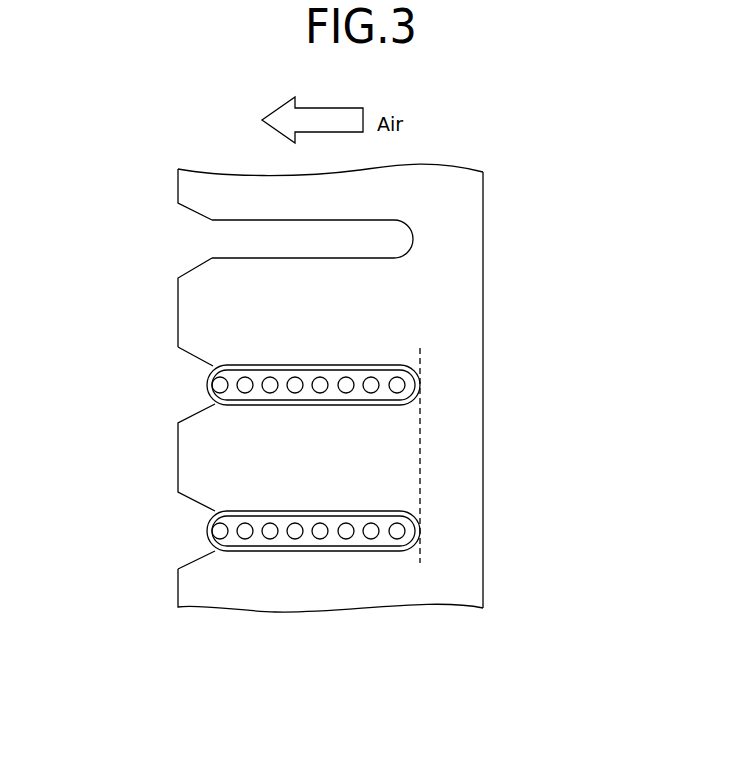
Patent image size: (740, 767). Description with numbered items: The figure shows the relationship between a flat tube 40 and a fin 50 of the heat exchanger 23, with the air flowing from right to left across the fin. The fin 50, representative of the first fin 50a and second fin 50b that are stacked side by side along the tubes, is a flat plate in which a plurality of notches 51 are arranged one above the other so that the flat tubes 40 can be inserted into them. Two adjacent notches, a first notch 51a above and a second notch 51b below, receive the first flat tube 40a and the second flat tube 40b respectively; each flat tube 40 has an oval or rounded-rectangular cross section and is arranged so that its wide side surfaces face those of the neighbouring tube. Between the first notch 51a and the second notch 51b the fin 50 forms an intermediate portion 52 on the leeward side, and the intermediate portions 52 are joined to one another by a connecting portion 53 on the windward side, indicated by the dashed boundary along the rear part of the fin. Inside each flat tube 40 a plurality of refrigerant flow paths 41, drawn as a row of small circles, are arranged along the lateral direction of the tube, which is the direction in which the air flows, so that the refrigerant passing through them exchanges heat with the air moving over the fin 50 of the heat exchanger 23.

The heat exchanger 23 is at (530, 210).
The fin 50 is at (483, 350).
The first fin 50a is at (330, 386).
The second fin 50b is at (330, 590).
The notch 51 is at (205, 236).
The first notch 51a is at (304, 360).
The second notch 51b is at (275, 552).
The intermediate portion 52 is at (275, 468).
The connecting portion 53 is at (443, 453).
The flat tube 40 is at (251, 458).
The first flat tube 40a is at (222, 385).
The second flat tube 40b is at (222, 531).
The refrigerant flow path 41 is at (208, 392).